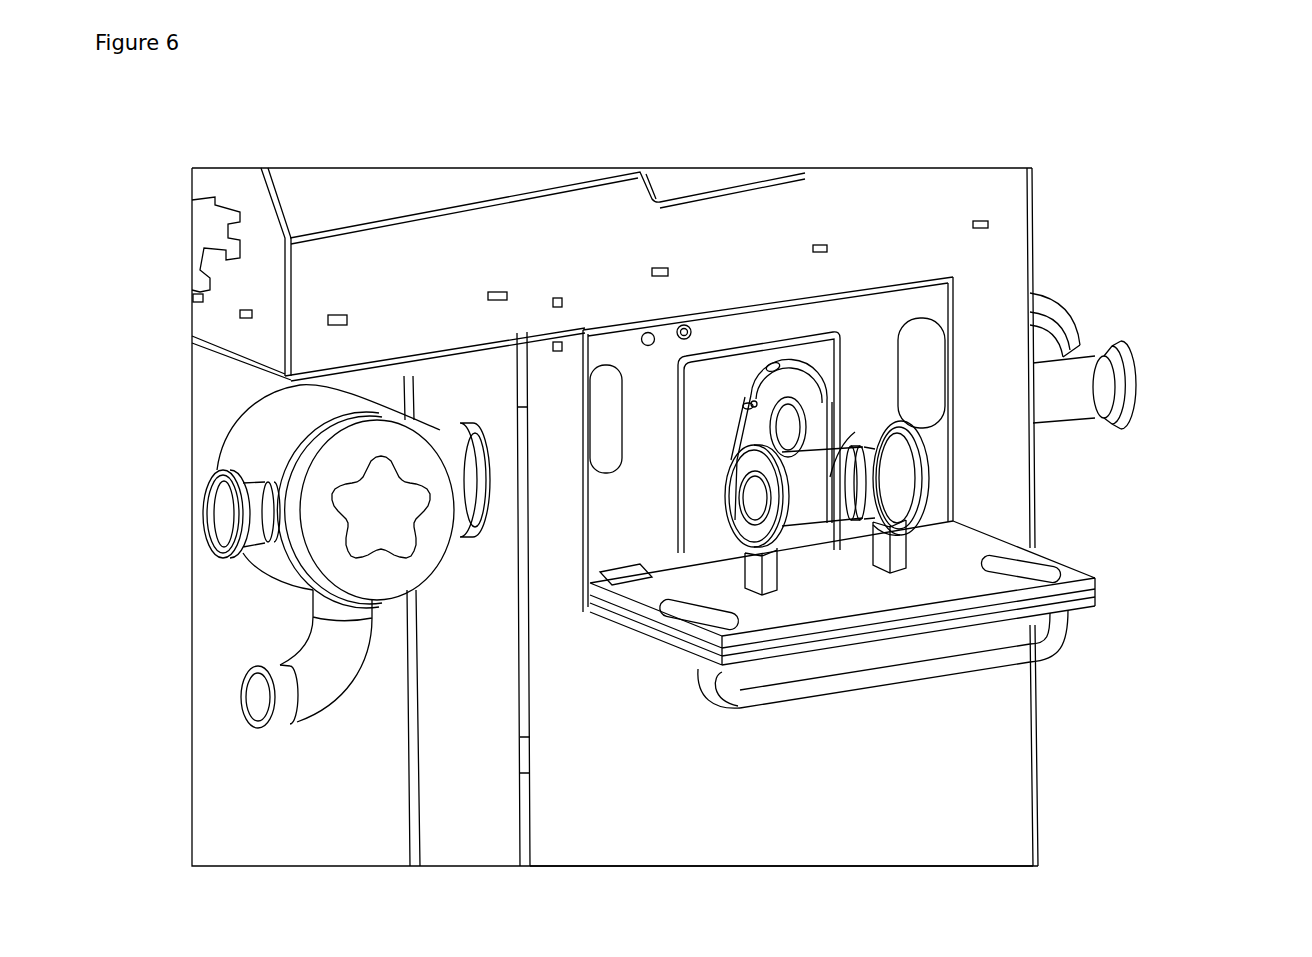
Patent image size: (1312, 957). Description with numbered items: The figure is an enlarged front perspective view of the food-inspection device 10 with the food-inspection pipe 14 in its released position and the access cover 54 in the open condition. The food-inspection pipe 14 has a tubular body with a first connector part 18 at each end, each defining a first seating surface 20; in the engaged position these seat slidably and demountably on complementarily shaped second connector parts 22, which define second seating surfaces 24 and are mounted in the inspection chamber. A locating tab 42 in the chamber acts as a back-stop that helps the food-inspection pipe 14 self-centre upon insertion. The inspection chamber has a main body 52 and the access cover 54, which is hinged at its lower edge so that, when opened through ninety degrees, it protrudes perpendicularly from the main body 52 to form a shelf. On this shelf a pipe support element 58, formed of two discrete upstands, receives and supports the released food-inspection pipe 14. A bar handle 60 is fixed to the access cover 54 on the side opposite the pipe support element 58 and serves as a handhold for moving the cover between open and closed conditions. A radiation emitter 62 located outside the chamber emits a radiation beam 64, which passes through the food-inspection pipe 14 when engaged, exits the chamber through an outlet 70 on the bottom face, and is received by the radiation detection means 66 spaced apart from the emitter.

The food-inspection device 10 is at (211, 156).
The food-inspection pipe 14 is at (1033, 298).
The first connector part 18 is at (1052, 340).
The first seating surface 20 is at (903, 560).
The second connector part 22 is at (1000, 347).
The second seating surface 24 is at (881, 323).
The locating tab 42 is at (851, 266).
The main body 52 is at (971, 333).
The access cover 54 is at (1027, 650).
The pipe support element 58 is at (1085, 580).
The handle 60 is at (903, 675).
The radiation emitter 62 is at (768, 365).
The radiation beam 64 is at (668, 335).
The radiation detection means 66 is at (852, 720).
The outlet 70 is at (637, 338).